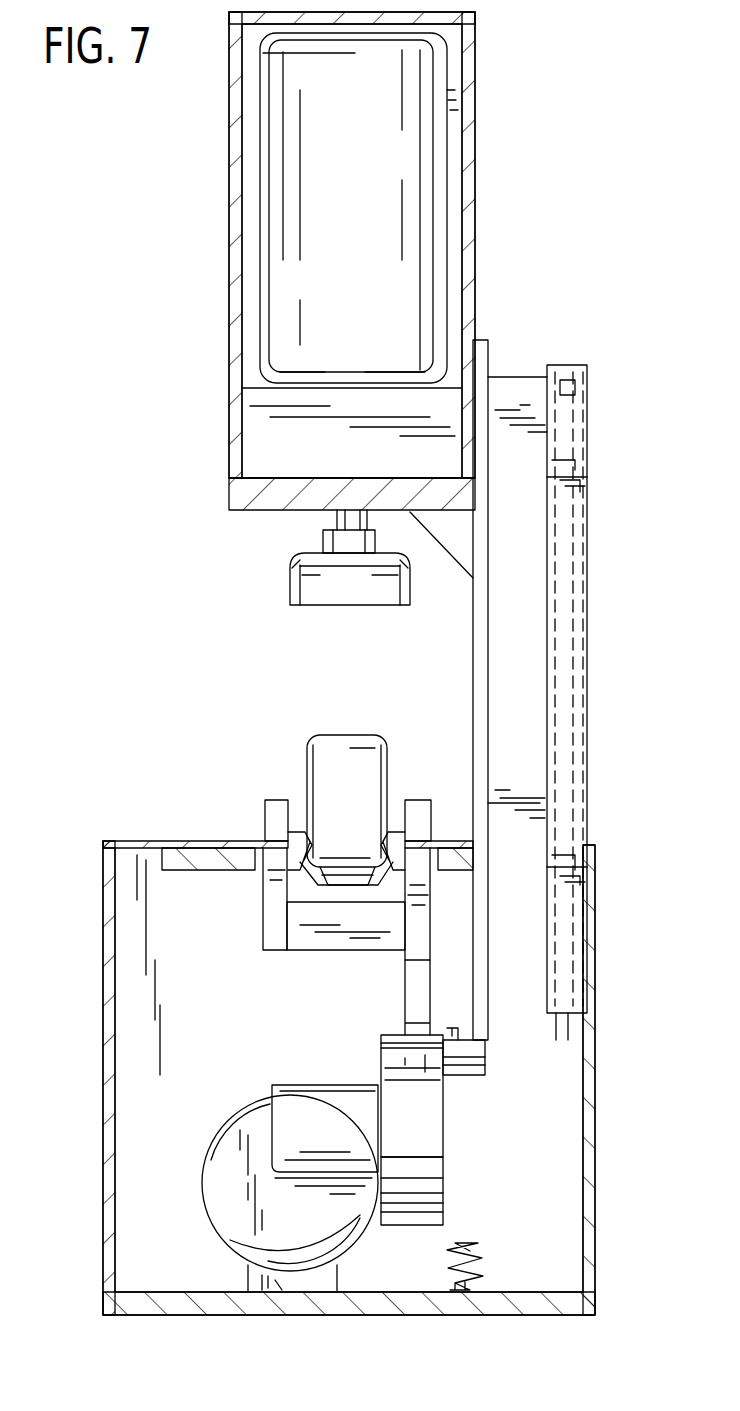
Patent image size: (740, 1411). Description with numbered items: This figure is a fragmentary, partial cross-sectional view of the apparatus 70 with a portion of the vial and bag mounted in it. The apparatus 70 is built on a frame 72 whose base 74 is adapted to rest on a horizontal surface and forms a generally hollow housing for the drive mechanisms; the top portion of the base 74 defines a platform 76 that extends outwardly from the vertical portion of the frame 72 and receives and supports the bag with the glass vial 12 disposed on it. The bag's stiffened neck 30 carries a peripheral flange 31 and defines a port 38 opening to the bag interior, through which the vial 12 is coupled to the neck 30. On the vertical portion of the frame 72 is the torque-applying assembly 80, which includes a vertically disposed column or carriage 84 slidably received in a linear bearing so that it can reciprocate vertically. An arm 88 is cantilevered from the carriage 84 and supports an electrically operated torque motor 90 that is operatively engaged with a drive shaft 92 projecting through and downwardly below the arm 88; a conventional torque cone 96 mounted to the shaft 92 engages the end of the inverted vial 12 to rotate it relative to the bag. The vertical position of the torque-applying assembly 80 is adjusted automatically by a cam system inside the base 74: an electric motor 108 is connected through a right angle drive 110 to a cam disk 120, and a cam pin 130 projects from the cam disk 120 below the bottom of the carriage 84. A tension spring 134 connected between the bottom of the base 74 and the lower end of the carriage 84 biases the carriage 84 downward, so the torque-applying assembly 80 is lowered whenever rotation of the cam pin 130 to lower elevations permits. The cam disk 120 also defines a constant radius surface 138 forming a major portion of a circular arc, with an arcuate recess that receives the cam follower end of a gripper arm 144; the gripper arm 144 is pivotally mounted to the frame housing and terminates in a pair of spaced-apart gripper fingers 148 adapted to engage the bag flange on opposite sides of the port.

The glass vial 12 is at (305, 738).
The neck 30 is at (300, 875).
The peripheral flange 31 is at (275, 838).
The port 38 is at (318, 835).
The apparatus 70 is at (170, 270).
The frame 72 is at (592, 770).
The base 74 is at (555, 1296).
The platform 76 is at (448, 838).
The torque-applying assembly 80 is at (500, 368).
The carriage 84 is at (485, 565).
The arm 88 is at (255, 500).
The torque motor 90 is at (425, 228).
The drive shaft 92 is at (340, 521).
The torque cone 96 is at (305, 587).
The electric motor 108 is at (225, 1115).
The right angle drive 110 is at (295, 1082).
The cam disk 120 is at (452, 1178).
The cam pin 130 is at (470, 1062).
The tension spring 134 is at (472, 1256).
The constant radius surface 138 is at (425, 1118).
The gripper arm 144 is at (402, 986).
The gripper fingers 148 is at (268, 803).